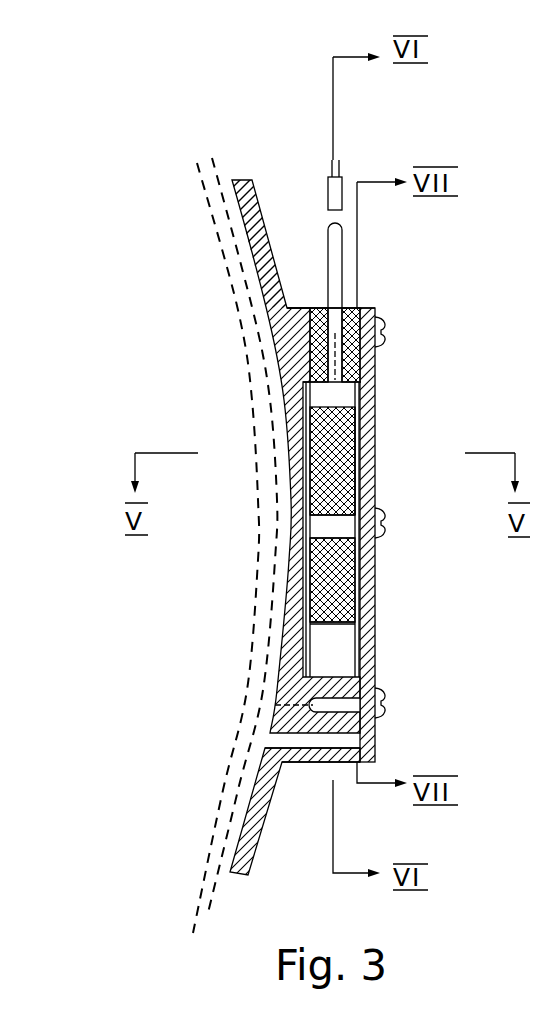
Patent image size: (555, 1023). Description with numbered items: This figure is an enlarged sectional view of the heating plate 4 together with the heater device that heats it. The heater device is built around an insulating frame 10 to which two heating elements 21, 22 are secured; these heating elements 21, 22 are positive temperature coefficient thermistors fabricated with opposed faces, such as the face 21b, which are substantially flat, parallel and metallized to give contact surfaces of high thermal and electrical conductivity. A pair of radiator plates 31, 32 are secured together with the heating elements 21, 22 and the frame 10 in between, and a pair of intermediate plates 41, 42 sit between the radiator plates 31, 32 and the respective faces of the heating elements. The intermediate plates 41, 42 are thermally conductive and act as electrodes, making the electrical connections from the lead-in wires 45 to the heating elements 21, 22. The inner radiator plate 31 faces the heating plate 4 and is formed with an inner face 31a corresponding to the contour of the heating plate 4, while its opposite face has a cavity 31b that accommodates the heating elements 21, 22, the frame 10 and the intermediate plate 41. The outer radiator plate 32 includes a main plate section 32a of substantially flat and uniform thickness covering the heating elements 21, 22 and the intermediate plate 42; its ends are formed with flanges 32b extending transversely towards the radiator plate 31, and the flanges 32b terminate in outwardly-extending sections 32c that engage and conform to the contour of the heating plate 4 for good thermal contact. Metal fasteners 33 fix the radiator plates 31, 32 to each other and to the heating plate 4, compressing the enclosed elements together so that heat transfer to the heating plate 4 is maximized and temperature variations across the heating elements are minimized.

The heating plate 4 is at (200, 150).
The frame 10 is at (383, 300).
The heating element 21 is at (350, 487).
The face of heating element 21b is at (358, 443).
The heating element 22 is at (372, 573).
The inner radiator plate 31 is at (310, 347).
The inner face 31a is at (286, 401).
The cavity 31b is at (325, 524).
The radiator plate 32 is at (373, 372).
The main plate section 32a is at (374, 401).
The flange 32b is at (308, 293).
The outwardly-extending section 32c is at (268, 253).
The fastener 33 is at (386, 328).
The intermediate plate 41 is at (340, 600).
The intermediate plate 42 is at (347, 619).
The lead-in wire 45 is at (340, 177).